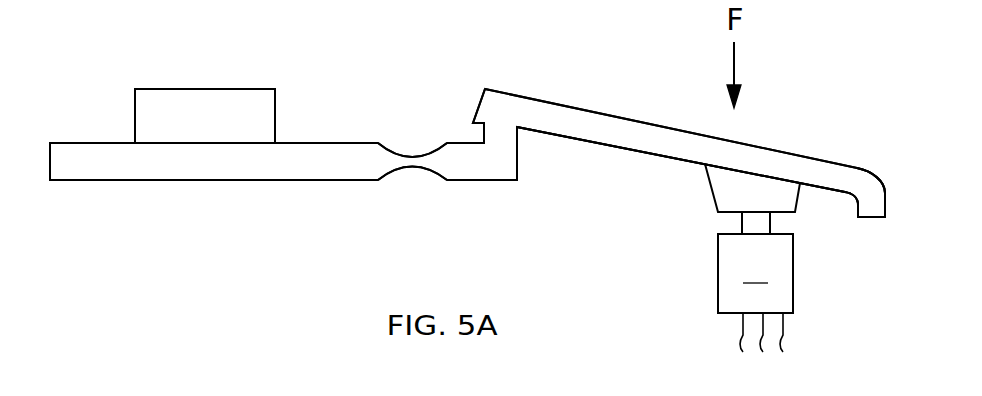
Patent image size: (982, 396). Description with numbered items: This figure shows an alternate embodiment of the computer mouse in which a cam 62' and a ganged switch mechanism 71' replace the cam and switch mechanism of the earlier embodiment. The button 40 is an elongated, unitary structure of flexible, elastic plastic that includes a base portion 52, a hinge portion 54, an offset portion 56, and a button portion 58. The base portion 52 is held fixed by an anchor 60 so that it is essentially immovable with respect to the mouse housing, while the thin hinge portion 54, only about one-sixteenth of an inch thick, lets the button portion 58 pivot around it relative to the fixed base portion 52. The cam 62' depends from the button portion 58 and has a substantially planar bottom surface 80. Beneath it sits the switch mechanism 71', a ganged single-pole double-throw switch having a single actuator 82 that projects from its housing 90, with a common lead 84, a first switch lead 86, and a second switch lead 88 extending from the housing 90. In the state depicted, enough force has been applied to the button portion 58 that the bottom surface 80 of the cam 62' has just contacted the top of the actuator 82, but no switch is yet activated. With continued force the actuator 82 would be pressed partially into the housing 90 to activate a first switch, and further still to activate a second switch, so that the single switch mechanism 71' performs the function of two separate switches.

The button 40 is at (647, 92).
The base portion 52 is at (125, 165).
The hinge portion 54 is at (401, 187).
The offset portion 56 is at (497, 145).
The button portion 58 is at (633, 139).
The anchor 60 is at (133, 116).
The cam 62' is at (729, 188).
The bottom surface 80 is at (783, 217).
The actuator 82 is at (752, 225).
The common lead 84 is at (743, 352).
The first switch lead 86 is at (763, 352).
The second switch lead 88 is at (783, 352).
The housing 90 is at (755, 273).
The switch mechanism 71' is at (801, 296).